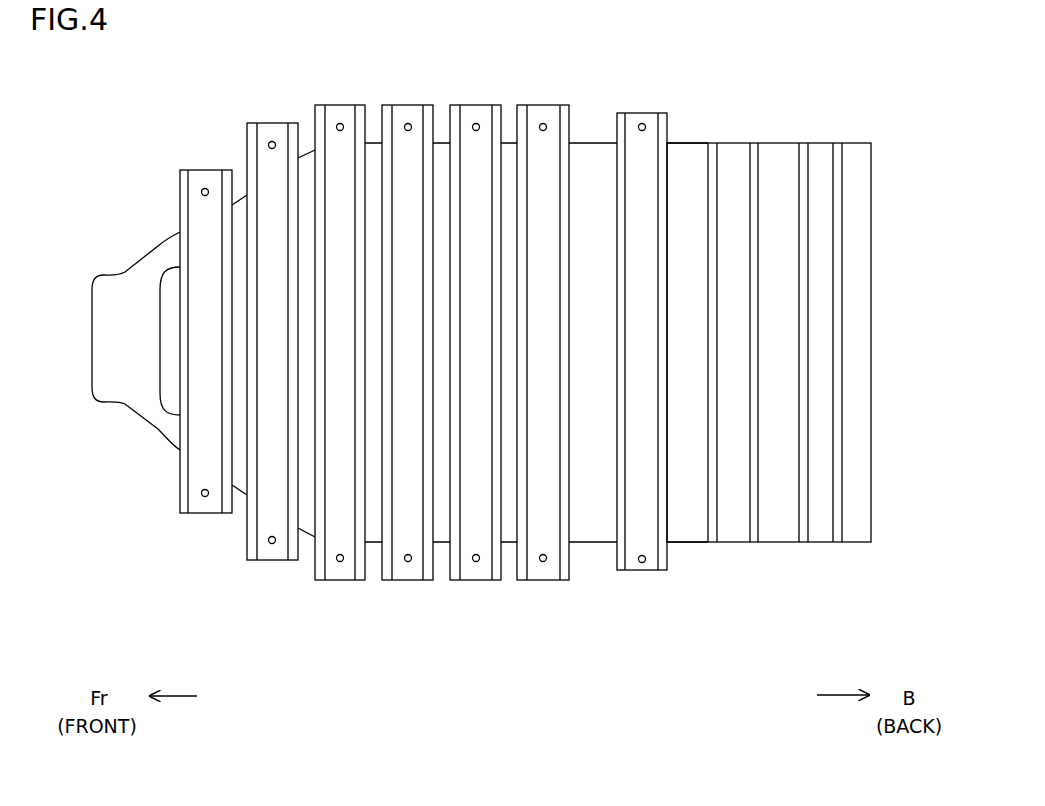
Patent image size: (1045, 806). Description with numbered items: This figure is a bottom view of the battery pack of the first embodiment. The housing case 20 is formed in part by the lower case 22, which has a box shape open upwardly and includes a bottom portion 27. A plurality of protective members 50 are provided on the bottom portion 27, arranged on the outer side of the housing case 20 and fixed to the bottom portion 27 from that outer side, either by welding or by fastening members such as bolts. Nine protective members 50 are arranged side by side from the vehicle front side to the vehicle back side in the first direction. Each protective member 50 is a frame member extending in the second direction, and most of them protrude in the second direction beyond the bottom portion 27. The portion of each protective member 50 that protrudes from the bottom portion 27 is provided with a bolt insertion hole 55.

The protective member 50 is at (214, 516).
The bolt insertion hole 55 is at (200, 192).
The housing case 20 is at (792, 307).
The lower case 22 is at (859, 142).
The bottom portion 27 is at (686, 165).